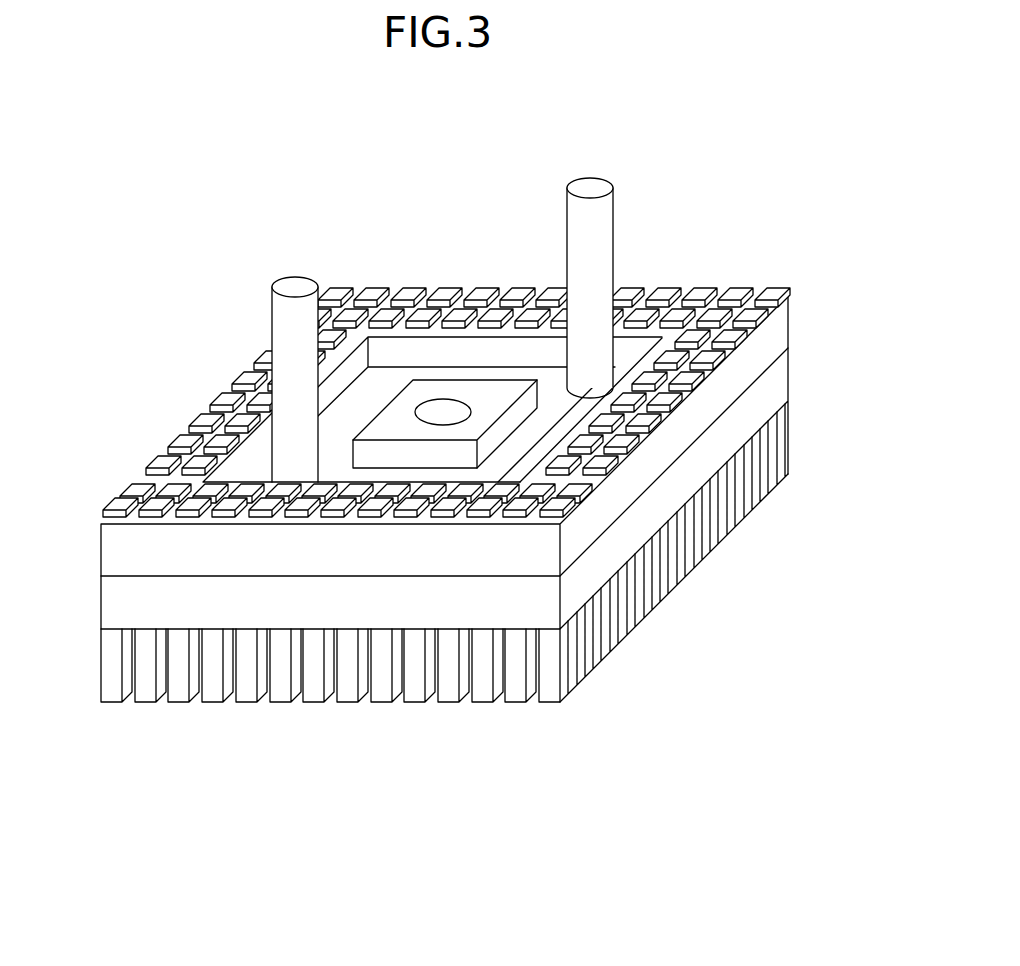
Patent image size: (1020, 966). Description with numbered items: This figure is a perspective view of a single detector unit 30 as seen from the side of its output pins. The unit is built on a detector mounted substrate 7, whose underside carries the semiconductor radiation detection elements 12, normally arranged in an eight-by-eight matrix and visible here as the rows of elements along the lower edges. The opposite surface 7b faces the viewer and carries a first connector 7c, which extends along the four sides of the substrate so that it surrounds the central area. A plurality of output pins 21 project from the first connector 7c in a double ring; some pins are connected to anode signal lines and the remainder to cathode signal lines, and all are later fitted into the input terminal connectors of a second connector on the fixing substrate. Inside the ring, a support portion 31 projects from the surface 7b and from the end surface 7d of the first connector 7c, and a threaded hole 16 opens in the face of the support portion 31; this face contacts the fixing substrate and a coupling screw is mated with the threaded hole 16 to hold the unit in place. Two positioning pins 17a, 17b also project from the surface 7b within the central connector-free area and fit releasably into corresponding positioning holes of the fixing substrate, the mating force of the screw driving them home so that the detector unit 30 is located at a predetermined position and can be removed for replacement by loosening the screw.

The detector mounted substrate 7 is at (113, 615).
The surface 7b is at (508, 467).
The first connector 7c is at (765, 352).
The end surface 7d is at (673, 337).
The semiconductor radiation detection elements 12 is at (382, 688).
The threaded hole 16 is at (443, 398).
The positioning pin 17a is at (592, 188).
The positioning pin 17b is at (298, 290).
The output pins 21 is at (188, 433).
The detector unit 30 is at (471, 469).
The support portion 31 is at (507, 423).